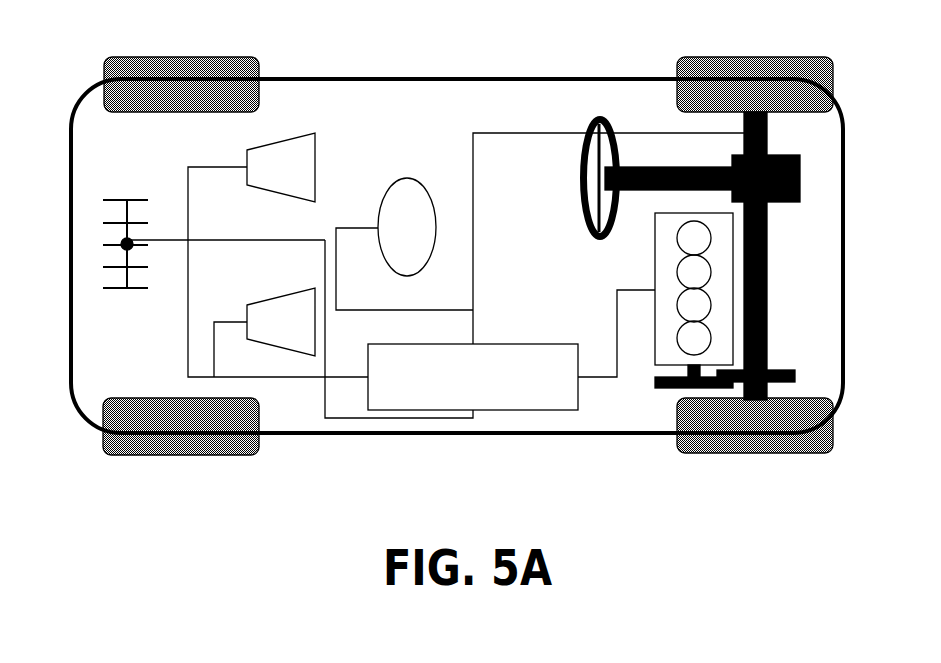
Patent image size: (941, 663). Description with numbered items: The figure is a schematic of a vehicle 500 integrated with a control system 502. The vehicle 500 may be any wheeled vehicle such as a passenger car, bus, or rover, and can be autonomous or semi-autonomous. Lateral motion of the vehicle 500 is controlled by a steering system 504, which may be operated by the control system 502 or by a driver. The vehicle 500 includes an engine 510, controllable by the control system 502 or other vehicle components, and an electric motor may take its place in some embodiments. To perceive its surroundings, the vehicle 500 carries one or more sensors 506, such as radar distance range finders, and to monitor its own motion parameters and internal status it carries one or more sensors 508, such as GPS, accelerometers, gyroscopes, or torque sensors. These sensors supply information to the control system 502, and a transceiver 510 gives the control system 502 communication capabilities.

The vehicle 500 is at (373, 78).
The control system 502 is at (505, 344).
The steering system 504 is at (800, 184).
The sensors 506 is at (267, 143).
The sensors 508 is at (380, 215).
The engine 510 is at (125, 200).